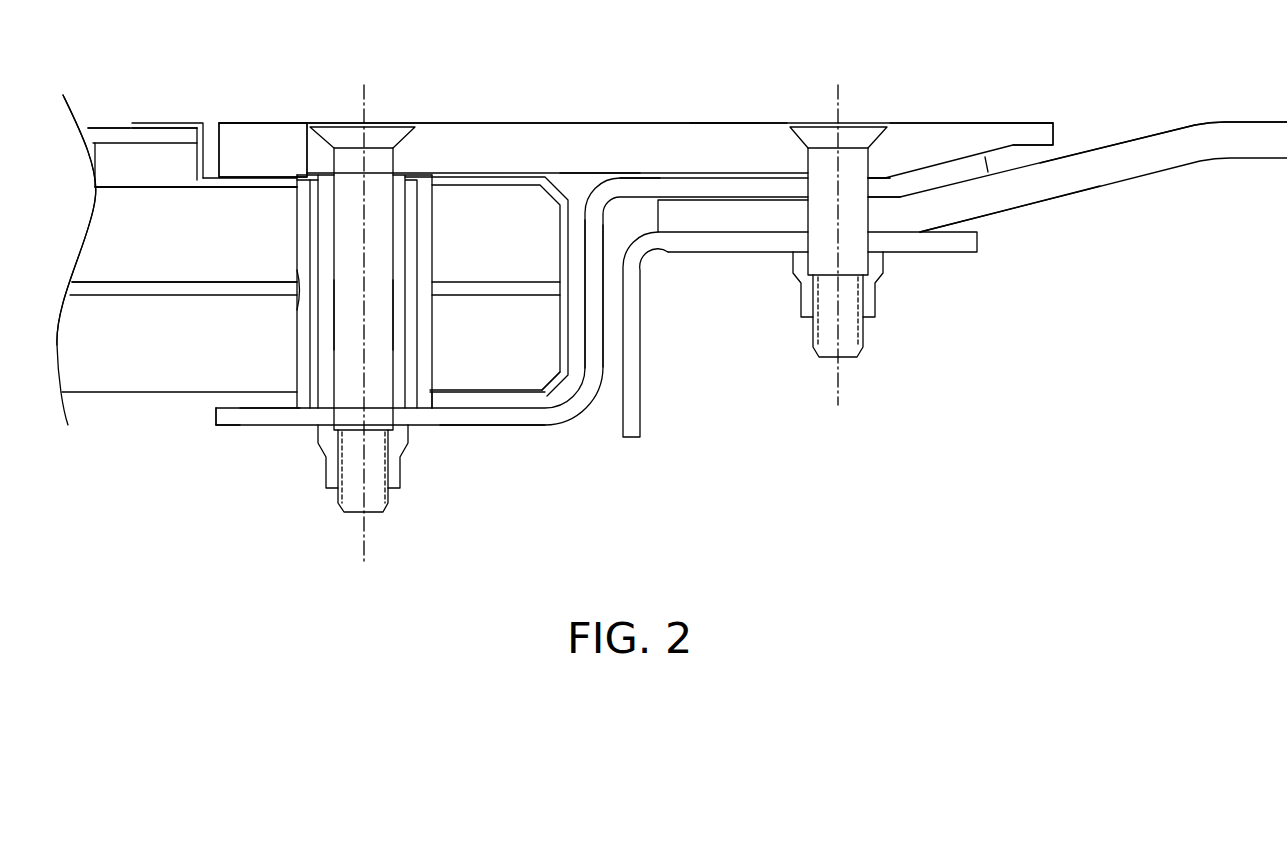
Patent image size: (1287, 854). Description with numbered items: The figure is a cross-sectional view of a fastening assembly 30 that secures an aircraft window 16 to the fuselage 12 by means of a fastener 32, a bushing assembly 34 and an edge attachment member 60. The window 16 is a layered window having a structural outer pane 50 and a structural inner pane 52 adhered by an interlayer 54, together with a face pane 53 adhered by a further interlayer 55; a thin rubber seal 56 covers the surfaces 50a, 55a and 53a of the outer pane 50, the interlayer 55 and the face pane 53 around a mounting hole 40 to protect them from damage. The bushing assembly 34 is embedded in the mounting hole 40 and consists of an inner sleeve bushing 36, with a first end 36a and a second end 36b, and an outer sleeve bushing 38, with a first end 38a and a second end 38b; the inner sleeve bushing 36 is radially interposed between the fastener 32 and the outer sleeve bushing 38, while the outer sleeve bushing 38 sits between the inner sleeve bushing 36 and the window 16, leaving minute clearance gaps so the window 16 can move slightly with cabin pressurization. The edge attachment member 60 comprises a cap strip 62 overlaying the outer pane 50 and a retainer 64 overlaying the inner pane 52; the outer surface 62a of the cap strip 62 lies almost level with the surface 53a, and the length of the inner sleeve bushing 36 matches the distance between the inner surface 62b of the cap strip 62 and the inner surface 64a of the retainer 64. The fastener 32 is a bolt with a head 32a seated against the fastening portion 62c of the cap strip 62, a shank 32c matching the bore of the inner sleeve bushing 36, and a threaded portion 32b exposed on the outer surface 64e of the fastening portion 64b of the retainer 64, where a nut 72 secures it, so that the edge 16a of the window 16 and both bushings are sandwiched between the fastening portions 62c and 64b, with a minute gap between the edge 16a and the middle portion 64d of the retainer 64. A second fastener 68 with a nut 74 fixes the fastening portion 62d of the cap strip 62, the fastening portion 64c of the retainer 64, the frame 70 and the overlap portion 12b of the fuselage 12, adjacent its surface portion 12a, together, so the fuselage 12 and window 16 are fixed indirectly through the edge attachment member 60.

The fuselage 12 is at (1037, 190).
The surface portion 12a is at (1100, 140).
The overlap portion 12b is at (983, 220).
The window 16 is at (118, 398).
The edge 16a is at (517, 208).
The fastening assembly 30 is at (484, 90).
The fastener 32 is at (365, 216).
The head 32a is at (330, 124).
The threaded portion 32b is at (373, 472).
The shank 32c is at (373, 327).
The bushing assembly 34 is at (317, 390).
The inner sleeve bushing 36 is at (397, 267).
The first end 36a is at (407, 172).
The second end 36b is at (400, 397).
The outer sleeve bushing 38 is at (302, 348).
The first end 38a is at (302, 187).
The second end 38b is at (423, 400).
The mounting hole 40 is at (298, 288).
The outer pane 50 is at (105, 197).
The surface 50a is at (257, 183).
The inner pane 52 is at (63, 355).
The face pane 53 is at (103, 133).
The surface 53a is at (118, 128).
The interlayer 54 is at (153, 284).
The interlayer 55 is at (107, 163).
The surface 55a is at (205, 160).
The rubber seal 56 is at (178, 120).
The edge attachment member 60 is at (645, 160).
The cap strip 62 is at (752, 143).
The outer surface 62a is at (702, 120).
The inner surface 62b is at (588, 172).
The fastening portion 62c is at (272, 133).
The fastening portion 62d is at (982, 128).
The retainer 64 is at (510, 440).
The inner surface 64a is at (270, 400).
The fastening portion 64b is at (228, 418).
The fastening portion 64c is at (893, 190).
The middle portion 64d is at (597, 338).
The outer surface 64e is at (437, 425).
The fastener 68 is at (880, 158).
The frame 70 is at (978, 245).
The nut 72 is at (328, 477).
The nut 74 is at (873, 283).